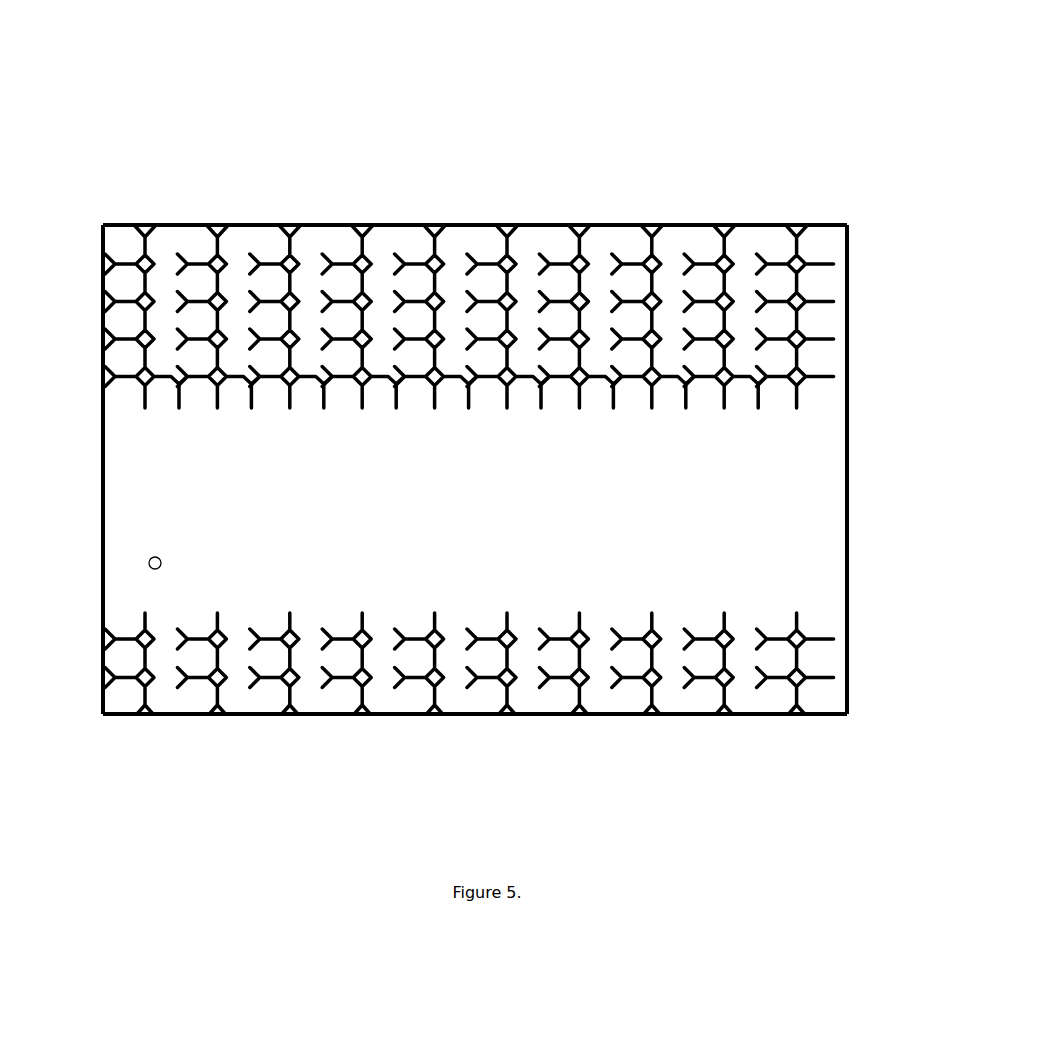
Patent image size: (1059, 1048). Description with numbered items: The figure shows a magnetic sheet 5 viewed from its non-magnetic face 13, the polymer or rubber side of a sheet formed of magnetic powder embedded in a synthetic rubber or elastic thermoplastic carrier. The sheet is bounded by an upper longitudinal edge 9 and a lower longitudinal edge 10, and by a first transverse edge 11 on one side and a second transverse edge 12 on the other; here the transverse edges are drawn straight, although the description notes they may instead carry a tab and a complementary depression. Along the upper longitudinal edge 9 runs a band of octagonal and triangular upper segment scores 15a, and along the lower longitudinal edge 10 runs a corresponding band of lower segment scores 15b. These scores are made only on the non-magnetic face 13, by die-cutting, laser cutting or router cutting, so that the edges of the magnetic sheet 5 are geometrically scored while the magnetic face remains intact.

The magnetic sheet 5 is at (671, 172).
The upper longitudinal edge 9 is at (506, 224).
The lower longitudinal edge 10 is at (240, 714).
The first transverse edge 11 is at (102, 275).
The second transverse edge 12 is at (847, 714).
The non-magnetic face 13 is at (152, 568).
The upper segment scores 15a is at (273, 262).
The lower segment scores 15b is at (496, 677).